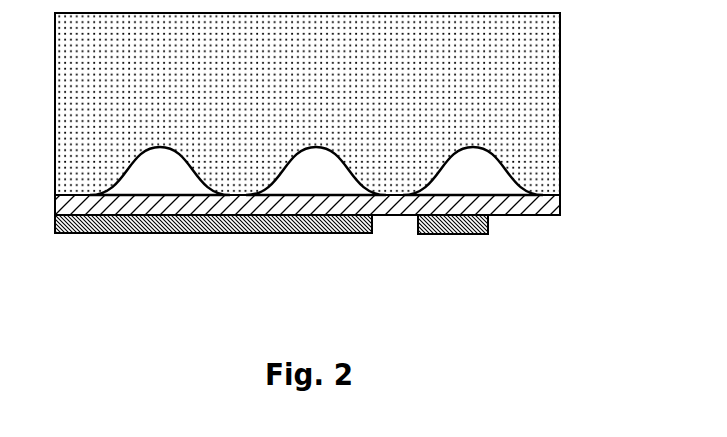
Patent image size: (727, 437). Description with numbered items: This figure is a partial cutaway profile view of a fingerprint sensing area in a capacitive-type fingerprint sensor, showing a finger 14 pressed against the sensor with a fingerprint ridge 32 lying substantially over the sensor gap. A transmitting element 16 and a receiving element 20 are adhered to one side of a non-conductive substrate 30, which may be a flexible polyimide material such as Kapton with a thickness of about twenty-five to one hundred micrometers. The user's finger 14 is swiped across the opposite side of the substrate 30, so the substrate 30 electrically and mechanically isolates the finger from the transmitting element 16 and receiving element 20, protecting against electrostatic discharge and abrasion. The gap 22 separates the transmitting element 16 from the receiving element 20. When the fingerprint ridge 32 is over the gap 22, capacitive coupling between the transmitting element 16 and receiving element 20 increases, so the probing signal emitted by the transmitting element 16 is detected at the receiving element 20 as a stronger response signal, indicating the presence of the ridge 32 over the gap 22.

The light guide body 14 is at (510, 52).
The transmitting element 16 is at (225, 233).
The receiving element 20 is at (457, 234).
The gap 22 is at (397, 244).
The non-conductive substrate 30 is at (547, 205).
The fingerprint ridge 32 is at (395, 182).